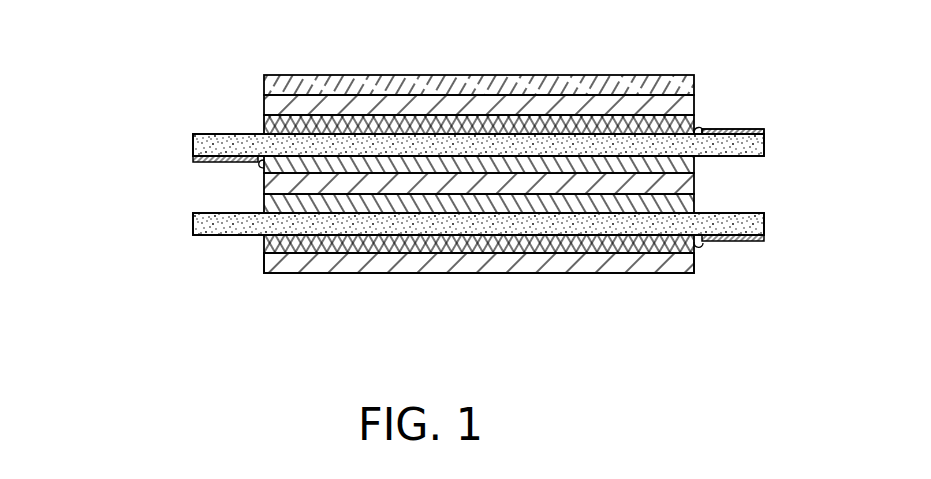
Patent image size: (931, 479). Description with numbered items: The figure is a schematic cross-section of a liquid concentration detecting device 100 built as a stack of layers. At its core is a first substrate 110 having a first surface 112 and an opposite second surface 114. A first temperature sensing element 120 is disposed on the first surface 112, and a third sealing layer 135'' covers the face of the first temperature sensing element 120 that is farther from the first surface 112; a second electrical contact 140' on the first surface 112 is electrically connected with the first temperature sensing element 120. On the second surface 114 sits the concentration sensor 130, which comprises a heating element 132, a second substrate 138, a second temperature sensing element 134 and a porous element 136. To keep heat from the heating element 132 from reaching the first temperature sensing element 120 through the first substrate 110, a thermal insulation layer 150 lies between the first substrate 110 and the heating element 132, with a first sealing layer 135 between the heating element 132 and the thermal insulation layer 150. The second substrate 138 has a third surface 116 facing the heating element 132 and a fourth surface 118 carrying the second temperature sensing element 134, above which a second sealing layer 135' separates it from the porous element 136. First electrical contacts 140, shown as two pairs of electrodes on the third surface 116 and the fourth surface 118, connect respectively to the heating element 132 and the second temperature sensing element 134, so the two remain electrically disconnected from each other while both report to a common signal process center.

The liquid concentration detecting device 100 is at (680, 318).
The concentration sensor 130 is at (70, 10).
The porous element 136 is at (265, 85).
The second sealing layer 135' is at (383, 77).
The second temperature sensing element 134 is at (265, 121).
The second substrate 138 is at (203, 145).
The heating element 132 is at (266, 171).
The first electrical contacts 140 is at (486, 134).
The fourth surface 118 is at (744, 132).
The third surface 116 is at (748, 158).
The thermal insulation layer 150 is at (687, 208).
The first sealing layer 135 is at (399, 200).
The first substrate 110 is at (765, 222).
The second surface 114 is at (207, 212).
The first surface 112 is at (205, 235).
The second electrical contact 140' is at (767, 237).
The first temperature sensing element 120 is at (695, 258).
The third sealing layer 135'' is at (527, 284).